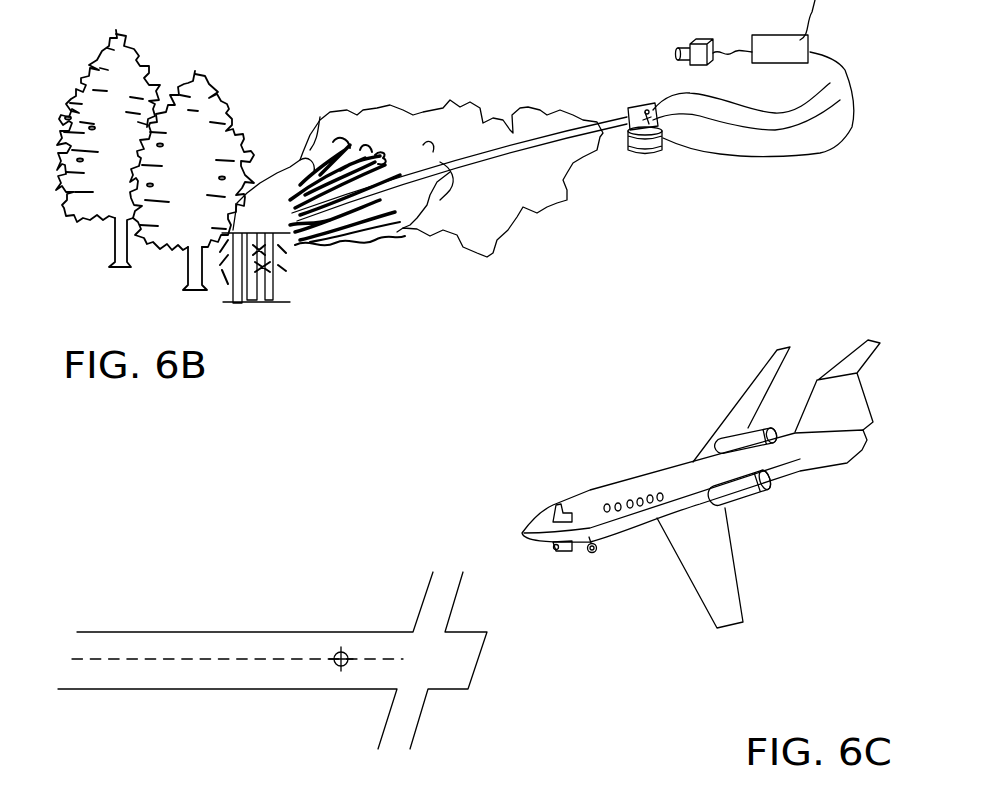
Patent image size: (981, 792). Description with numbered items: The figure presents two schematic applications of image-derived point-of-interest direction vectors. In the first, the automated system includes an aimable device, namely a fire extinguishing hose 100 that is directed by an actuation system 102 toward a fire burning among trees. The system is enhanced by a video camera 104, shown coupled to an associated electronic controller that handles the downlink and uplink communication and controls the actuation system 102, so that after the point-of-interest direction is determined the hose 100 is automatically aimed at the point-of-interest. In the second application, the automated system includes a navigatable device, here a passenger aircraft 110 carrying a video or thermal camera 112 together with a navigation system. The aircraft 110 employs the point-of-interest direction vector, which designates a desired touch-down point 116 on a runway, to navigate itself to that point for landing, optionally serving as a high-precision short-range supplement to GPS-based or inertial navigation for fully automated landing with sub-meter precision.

In FIG. 6B, the fire extinguishing hose 100 is at (640, 115).
In FIG. 6B, the actuation system 102 is at (657, 153).
In FIG. 6B, the video camera 104 is at (697, 43).
In FIG. 6C, the passenger aircraft 110 is at (680, 476).
In FIG. 6C, the video or thermal camera 112 is at (568, 550).
In FIG. 6C, the desired touch-down point 116 is at (347, 655).